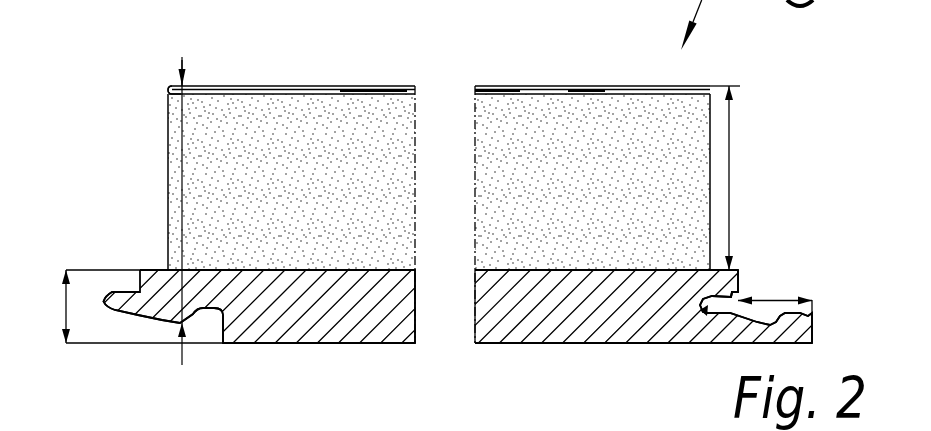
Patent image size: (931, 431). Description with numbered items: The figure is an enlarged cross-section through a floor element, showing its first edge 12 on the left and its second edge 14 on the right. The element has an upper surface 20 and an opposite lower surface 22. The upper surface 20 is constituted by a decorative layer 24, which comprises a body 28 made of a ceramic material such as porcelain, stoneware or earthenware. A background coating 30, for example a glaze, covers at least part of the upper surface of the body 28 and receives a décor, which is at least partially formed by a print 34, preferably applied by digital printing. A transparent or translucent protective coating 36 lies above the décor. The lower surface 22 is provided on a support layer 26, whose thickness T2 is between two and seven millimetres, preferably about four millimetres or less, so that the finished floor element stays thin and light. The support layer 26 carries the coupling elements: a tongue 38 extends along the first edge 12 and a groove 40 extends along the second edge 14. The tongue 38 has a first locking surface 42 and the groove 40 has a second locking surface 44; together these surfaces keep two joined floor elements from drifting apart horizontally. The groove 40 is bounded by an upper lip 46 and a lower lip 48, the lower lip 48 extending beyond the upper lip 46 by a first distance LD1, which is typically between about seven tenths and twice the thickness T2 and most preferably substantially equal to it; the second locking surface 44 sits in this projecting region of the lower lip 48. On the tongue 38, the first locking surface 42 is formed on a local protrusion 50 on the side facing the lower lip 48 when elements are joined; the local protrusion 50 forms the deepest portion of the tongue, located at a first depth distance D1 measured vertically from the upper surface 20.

The first edge 12 is at (140, 283).
The second edge 14 is at (738, 278).
The upper surface 20 is at (278, 86).
The lower surface 22 is at (548, 343).
The decorative layer 24 is at (168, 153).
The support layer 26 is at (480, 310).
The body 28 is at (495, 168).
The background coating 30 is at (176, 98).
The print 34 is at (362, 90).
The protective coating 36 is at (550, 85).
The tongue 38 is at (128, 309).
The groove 40 is at (700, 310).
The first locking surface 42 is at (192, 325).
The second locking surface 44 is at (812, 307).
The upper lip 46 is at (740, 296).
The lower lip 48 is at (757, 343).
The local protrusion 50 is at (175, 328).
The first depth distance D1 is at (182, 62).
The thickness T2 is at (66, 303).
The first distance LD1 is at (773, 292).